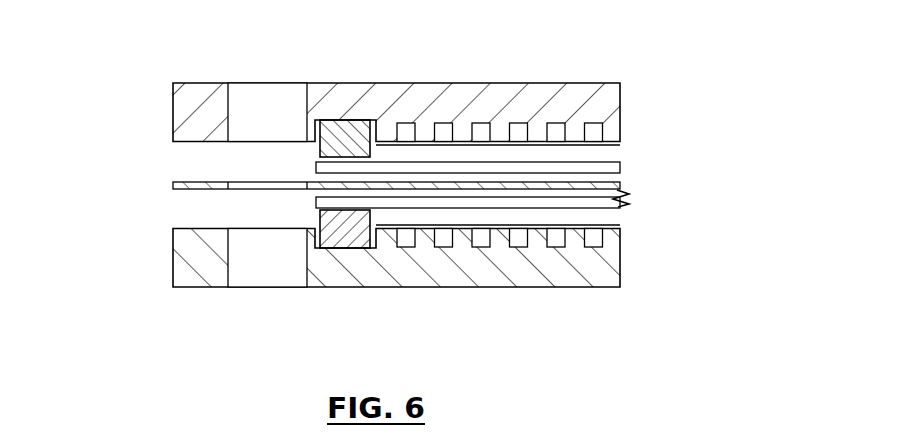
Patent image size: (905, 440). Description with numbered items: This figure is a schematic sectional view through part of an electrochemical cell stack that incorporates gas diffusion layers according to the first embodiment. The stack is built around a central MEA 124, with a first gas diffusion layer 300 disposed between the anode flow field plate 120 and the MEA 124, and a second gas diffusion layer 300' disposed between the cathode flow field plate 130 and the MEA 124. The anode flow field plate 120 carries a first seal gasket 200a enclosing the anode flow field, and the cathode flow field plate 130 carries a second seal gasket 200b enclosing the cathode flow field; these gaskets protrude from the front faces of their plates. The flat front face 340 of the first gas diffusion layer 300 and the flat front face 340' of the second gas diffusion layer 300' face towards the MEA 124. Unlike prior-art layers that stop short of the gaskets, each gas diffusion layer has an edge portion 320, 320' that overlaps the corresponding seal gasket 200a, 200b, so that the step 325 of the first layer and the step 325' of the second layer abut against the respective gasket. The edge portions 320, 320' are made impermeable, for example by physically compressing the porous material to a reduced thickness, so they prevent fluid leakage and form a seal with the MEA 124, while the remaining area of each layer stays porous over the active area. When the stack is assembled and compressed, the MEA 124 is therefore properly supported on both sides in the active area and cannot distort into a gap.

The anode flow field plate 120 is at (175, 273).
The MEA 124 is at (178, 184).
The cathode flow field plate 130 is at (523, 100).
The first seal gasket 200a is at (339, 230).
The second seal gasket 200b is at (346, 133).
The first gas diffusion layer 300 is at (551, 240).
The second gas diffusion layer 300' is at (548, 126).
The edge portion 320 is at (368, 279).
The edge portion 320' is at (376, 99).
The step 325 is at (446, 268).
The step 325' is at (436, 100).
The front face 340 is at (526, 204).
The front face 340' is at (524, 155).